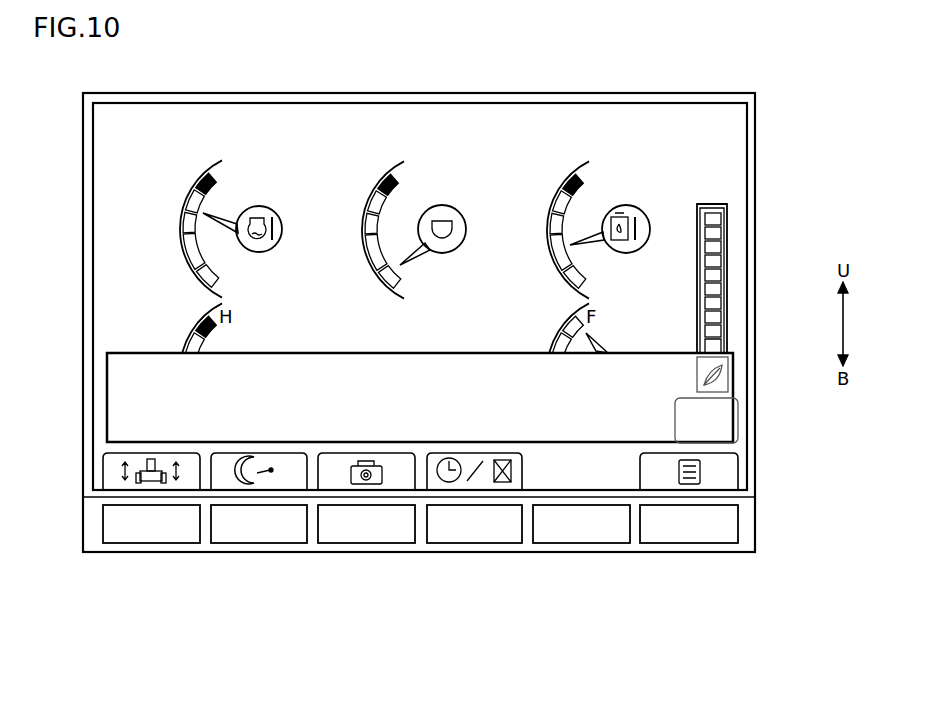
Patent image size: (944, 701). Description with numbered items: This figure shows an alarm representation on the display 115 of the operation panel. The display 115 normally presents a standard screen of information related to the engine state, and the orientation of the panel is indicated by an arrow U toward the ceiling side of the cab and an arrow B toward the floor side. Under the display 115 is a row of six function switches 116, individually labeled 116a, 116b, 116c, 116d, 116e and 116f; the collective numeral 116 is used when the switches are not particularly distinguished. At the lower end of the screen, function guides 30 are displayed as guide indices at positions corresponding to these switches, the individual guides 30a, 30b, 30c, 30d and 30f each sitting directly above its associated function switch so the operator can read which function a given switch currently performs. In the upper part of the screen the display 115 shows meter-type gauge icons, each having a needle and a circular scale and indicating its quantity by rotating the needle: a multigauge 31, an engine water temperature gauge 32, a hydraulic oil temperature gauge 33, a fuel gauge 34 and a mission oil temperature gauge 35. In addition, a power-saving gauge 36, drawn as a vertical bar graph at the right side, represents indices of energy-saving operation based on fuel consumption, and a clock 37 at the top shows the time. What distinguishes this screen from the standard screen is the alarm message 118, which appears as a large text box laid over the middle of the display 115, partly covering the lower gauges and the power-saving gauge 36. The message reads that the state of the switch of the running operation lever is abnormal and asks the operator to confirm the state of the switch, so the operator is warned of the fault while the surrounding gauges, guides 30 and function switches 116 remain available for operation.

The operation switches 30 is at (419, 567).
The switch (lift) 30a is at (112, 480).
The switch (night mode) 30b is at (225, 480).
The switch (camera) 30c is at (330, 480).
The switch (hour meter) 30d is at (517, 480).
The switch (menu) 30f is at (725, 480).
The engine speed meter 31 is at (468, 195).
The coolant temperature meter 32 is at (257, 190).
The oil temperature meter 33 is at (645, 197).
The warning message display 34 is at (647, 343).
The message display area 35 is at (278, 340).
The bar graph indicator 36 is at (728, 222).
The clock display 37 is at (433, 110).
The display 115 is at (720, 122).
The function switches 116 is at (420, 572).
The function switch 116a is at (153, 525).
The function switch 116b is at (260, 525).
The function switch 116c is at (368, 525).
The function switch 116d is at (477, 525).
The function switch 116e is at (583, 525).
The function switch 116f is at (689, 553).
The alarm message 118 is at (733, 387).